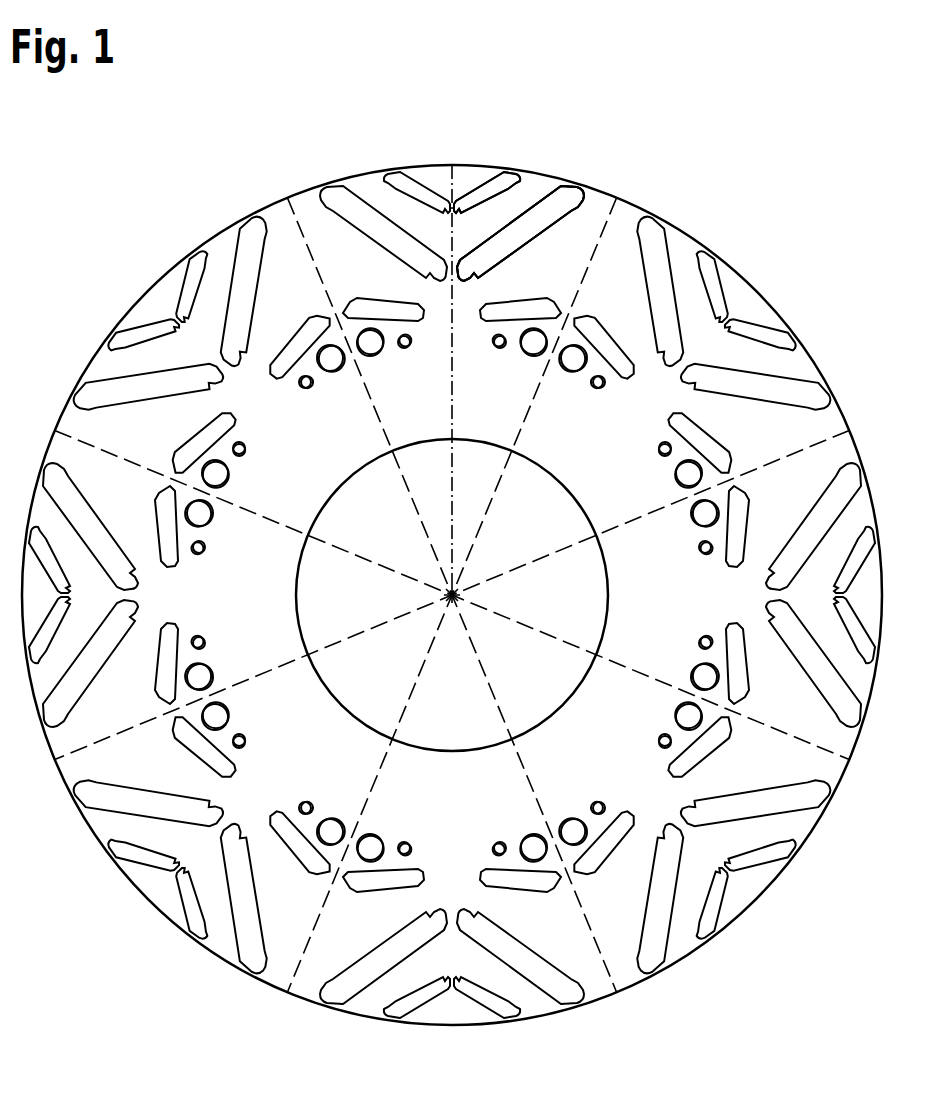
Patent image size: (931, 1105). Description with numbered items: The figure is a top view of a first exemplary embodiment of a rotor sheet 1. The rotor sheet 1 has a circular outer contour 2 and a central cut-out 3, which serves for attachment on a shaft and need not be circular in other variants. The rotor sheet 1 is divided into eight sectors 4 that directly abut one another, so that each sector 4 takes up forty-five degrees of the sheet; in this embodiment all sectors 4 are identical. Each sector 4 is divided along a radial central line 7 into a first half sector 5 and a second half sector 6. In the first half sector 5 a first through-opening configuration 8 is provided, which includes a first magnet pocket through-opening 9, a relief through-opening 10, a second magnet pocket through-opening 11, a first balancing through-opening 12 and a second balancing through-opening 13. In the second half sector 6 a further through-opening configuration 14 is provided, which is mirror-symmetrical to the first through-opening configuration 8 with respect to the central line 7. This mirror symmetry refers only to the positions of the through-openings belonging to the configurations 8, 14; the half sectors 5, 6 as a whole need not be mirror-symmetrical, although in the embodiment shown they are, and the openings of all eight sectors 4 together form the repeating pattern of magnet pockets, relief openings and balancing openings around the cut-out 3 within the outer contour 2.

The rotor sheet 1 is at (802, 167).
The circular outer contour 2 is at (218, 225).
The central cut-out 3 is at (531, 692).
The sector 4 is at (590, 216).
The first half sector 5 is at (463, 177).
The second half sector 6 is at (424, 177).
The radial central line 7 is at (452, 165).
The first through-opening configuration 8 is at (540, 175).
The first magnet pocket through-opening 9 is at (568, 186).
The relief through-opening 10 is at (546, 300).
The second magnet pocket through-opening 11 is at (505, 177).
The first balancing through-opening 12 is at (531, 357).
The second balancing through-opening 13 is at (499, 348).
The further through-opening configuration 14 is at (365, 186).